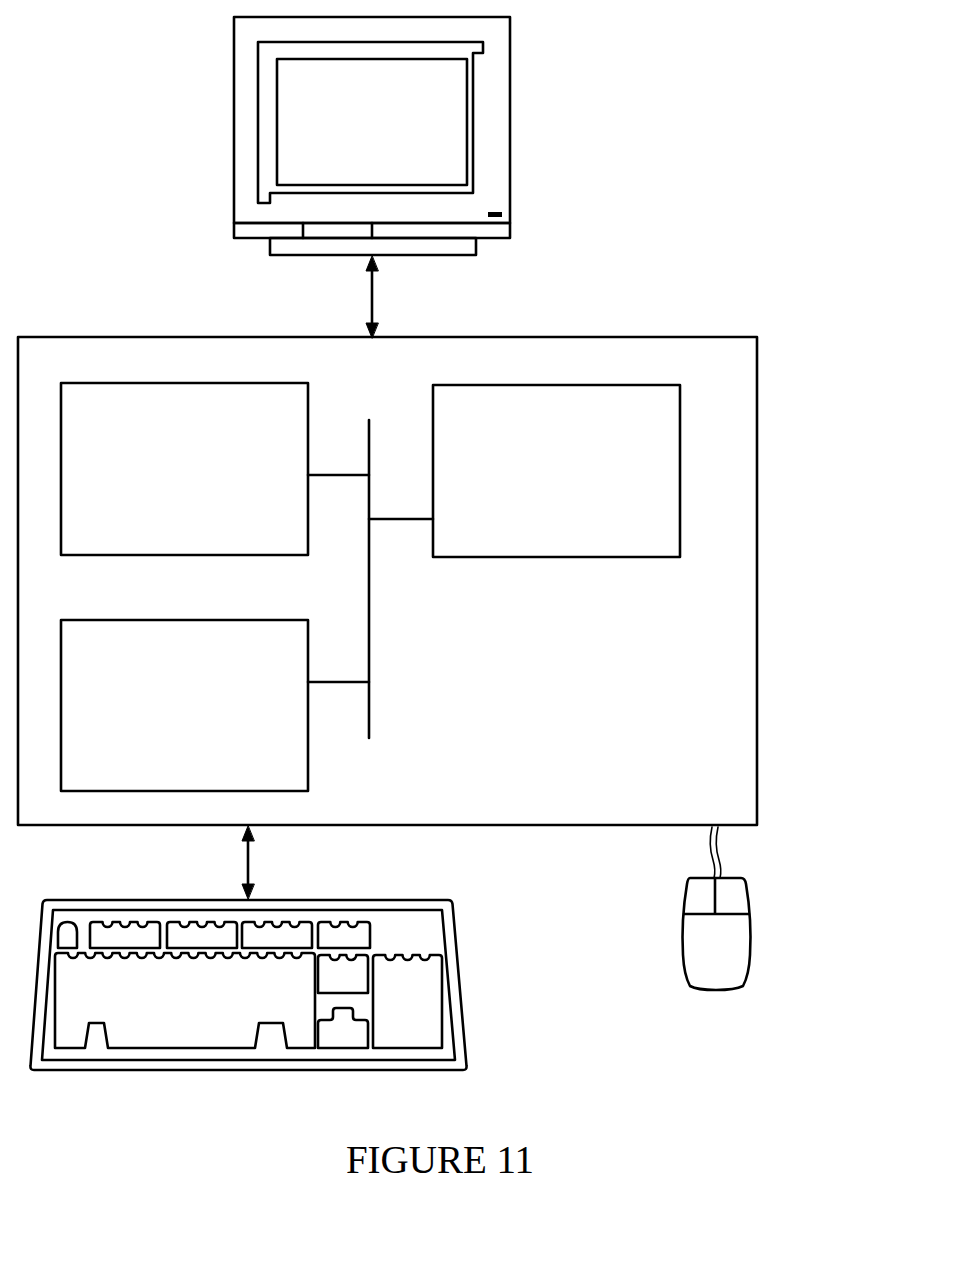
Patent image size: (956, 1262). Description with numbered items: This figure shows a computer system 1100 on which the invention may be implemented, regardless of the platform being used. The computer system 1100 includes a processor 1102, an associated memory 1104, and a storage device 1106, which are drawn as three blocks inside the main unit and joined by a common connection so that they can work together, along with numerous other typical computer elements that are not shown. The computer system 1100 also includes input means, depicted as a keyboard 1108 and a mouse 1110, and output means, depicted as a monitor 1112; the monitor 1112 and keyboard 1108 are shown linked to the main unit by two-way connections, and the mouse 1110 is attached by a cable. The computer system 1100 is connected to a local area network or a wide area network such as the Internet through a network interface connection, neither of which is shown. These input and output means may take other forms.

The computer system 1100 is at (772, 188).
The processor 1102 is at (184, 469).
The associated memory 1104 is at (184, 705).
The storage device 1106 is at (556, 471).
The keyboard 1108 is at (248, 985).
The mouse 1110 is at (752, 908).
The monitor 1112 is at (372, 136).